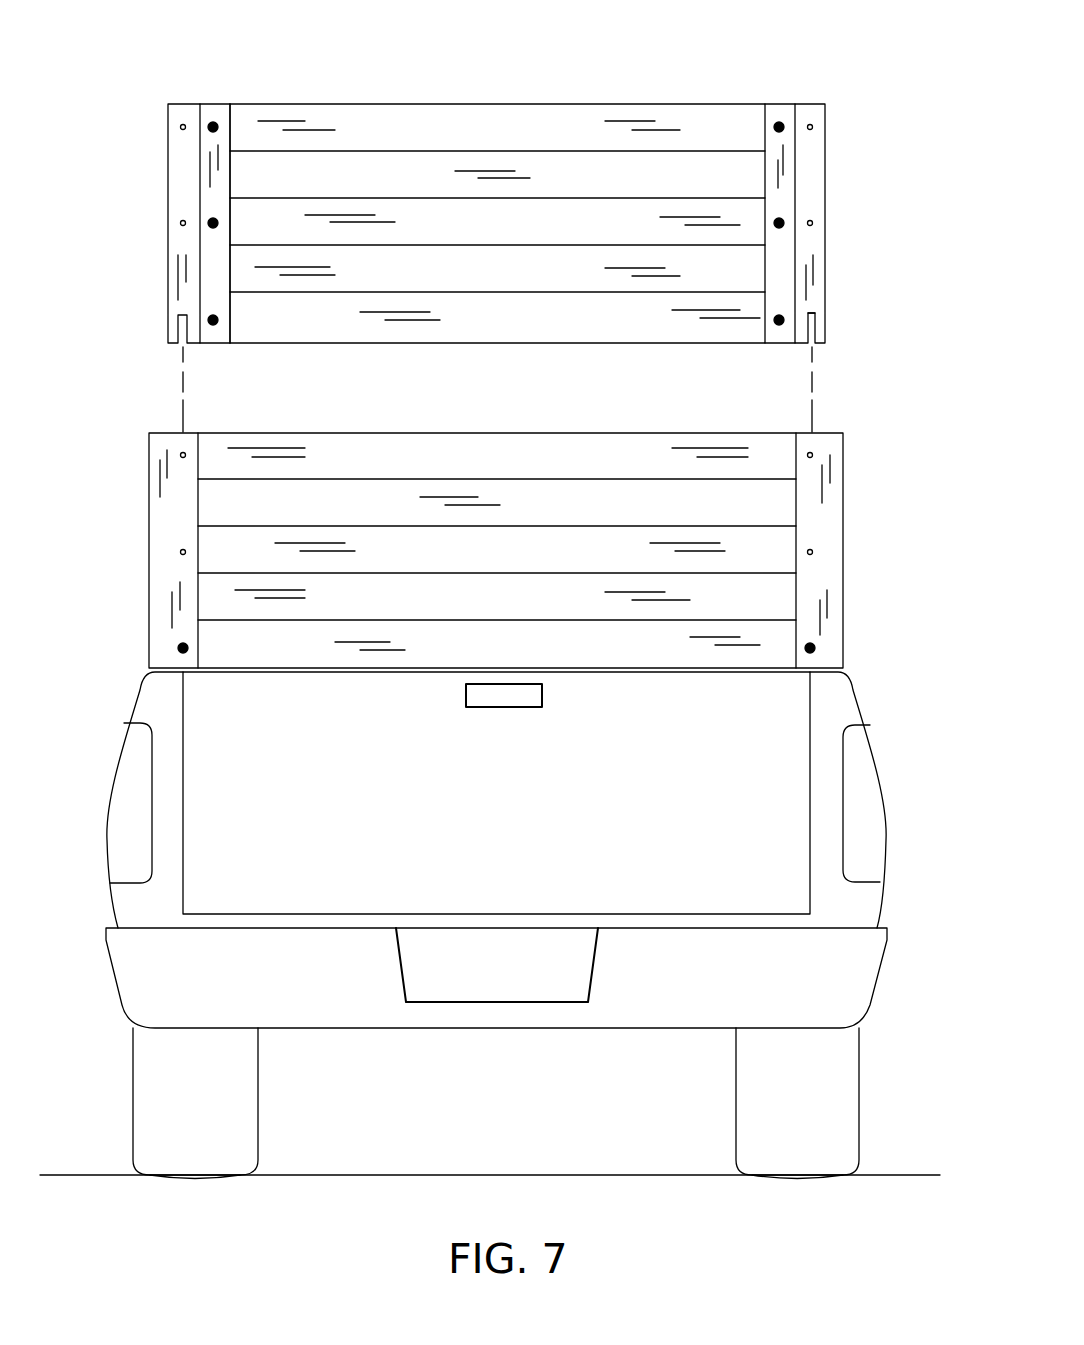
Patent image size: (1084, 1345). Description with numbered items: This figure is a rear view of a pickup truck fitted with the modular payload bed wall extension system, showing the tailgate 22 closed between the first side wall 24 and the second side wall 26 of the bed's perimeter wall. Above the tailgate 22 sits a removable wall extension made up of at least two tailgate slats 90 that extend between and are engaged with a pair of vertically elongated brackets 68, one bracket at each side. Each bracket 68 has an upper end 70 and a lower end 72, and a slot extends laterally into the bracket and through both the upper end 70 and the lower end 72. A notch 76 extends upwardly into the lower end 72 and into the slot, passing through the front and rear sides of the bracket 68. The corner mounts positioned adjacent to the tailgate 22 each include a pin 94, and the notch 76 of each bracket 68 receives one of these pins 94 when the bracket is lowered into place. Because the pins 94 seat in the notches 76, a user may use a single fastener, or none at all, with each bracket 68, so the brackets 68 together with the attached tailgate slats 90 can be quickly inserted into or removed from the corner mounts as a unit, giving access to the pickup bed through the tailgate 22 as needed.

The tailgate 22 is at (502, 876).
The first side wall 24 is at (137, 697).
The second side wall 26 is at (872, 717).
The bracket 68 is at (556, 220).
The upper end 70 is at (808, 103).
The lower end 72 is at (818, 345).
The notch 76 is at (812, 315).
The tailgate slats 90 is at (520, 175).
The pin 94 is at (815, 648).